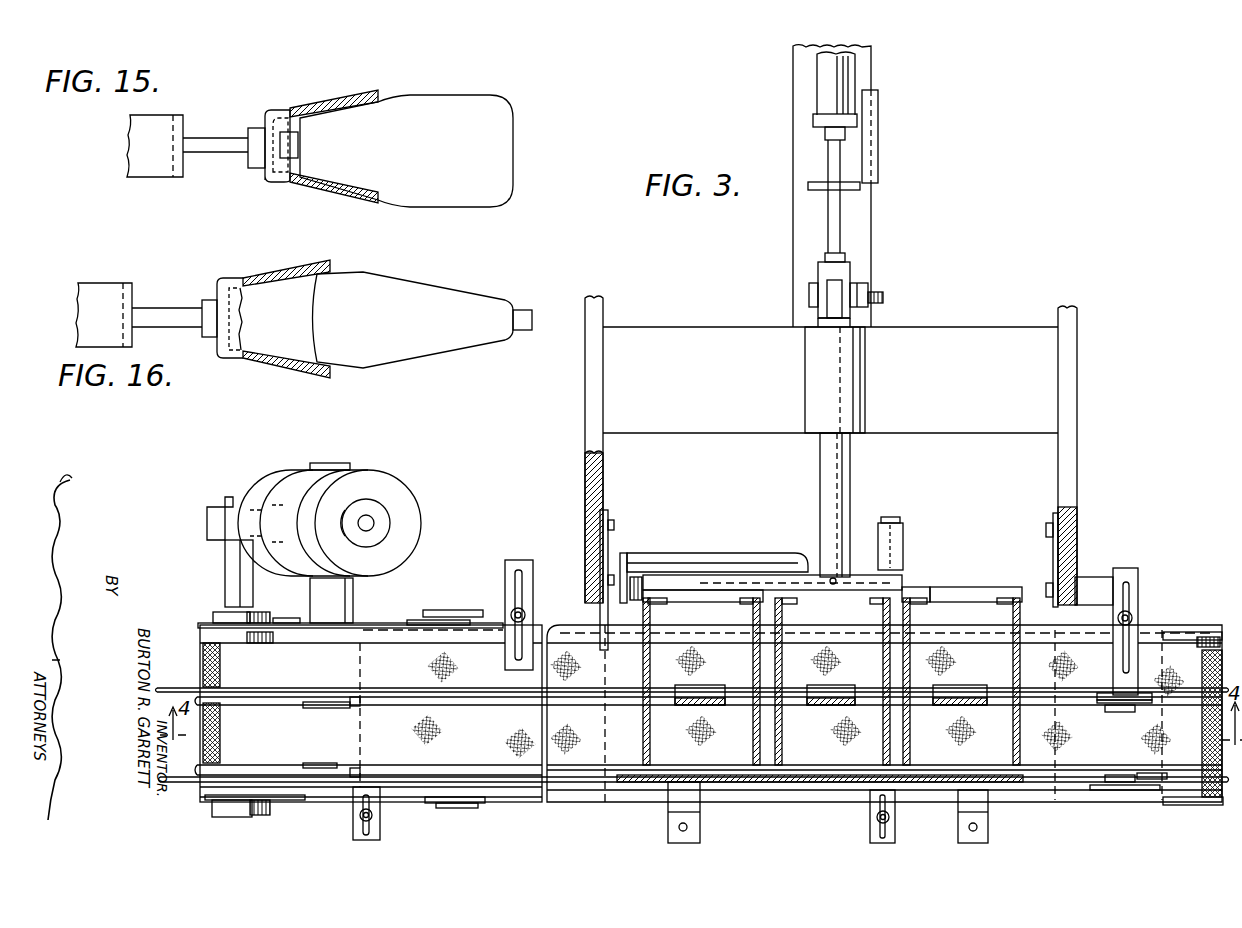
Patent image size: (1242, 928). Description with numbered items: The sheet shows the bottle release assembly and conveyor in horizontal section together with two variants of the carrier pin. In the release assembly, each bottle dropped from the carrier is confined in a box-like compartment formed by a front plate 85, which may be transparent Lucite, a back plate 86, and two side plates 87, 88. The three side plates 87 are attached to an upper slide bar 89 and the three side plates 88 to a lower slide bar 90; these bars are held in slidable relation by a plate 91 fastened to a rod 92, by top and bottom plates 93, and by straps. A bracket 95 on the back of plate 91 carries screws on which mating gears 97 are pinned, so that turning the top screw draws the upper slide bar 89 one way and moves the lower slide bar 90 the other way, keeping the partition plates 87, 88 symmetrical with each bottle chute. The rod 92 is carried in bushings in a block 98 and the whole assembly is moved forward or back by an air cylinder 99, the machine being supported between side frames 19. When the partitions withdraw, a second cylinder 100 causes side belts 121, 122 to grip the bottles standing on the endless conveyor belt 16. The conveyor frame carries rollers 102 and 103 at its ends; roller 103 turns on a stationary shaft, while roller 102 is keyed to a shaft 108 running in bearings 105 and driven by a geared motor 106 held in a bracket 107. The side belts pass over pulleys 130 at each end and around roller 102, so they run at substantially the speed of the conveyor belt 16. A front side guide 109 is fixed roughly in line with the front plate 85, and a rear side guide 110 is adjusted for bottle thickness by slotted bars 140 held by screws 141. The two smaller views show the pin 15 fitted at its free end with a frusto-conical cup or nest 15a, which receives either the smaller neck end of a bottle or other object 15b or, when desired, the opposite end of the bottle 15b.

In FIG. 15, the pin 15 is at (218, 143).
In FIG. 16, the pin 15 is at (162, 315).
In FIG. 15, the frusto-conical cup or nest 15a is at (323, 102).
In FIG. 16, the frusto-conical cup or nest 15a is at (273, 309).
In FIG. 15, the bottle or other object 15b is at (422, 103).
In FIG. 16, the bottle or other object 15b is at (410, 283).
In FIG. 3, the air cylinder 99 is at (858, 83).
In FIG. 3, the block 98 is at (862, 393).
In FIG. 3, the rod 92 is at (850, 493).
In FIG. 3, the side frames 19 is at (588, 424).
In FIG. 3, the bracket 95 is at (622, 560).
In FIG. 3, the mating gears 97 is at (640, 580).
In FIG. 3, the plate 91 is at (702, 556).
In FIG. 3, the plates 93 is at (745, 578).
In FIG. 3, the cylinder 100 is at (903, 545).
In FIG. 3, the upper slide bar 89 is at (925, 590).
In FIG. 3, the lower slide bar 90 is at (985, 590).
In FIG. 3, the conveyor belt 16 is at (1146, 655).
In FIG. 3, the roller 102 is at (210, 643).
In FIG. 3, the rear side guide 110 is at (270, 696).
In FIG. 3, the front side guide 109 is at (255, 780).
In FIG. 3, the pulley 130 is at (318, 763).
In FIG. 3, the side belt 122 is at (355, 703).
In FIG. 3, the side belt 121 is at (360, 774).
In FIG. 3, the roller 103 is at (1220, 634).
In FIG. 3, the side plate 87 is at (650, 740).
In FIG. 3, the side plate 88 is at (753, 665).
In FIG. 3, the back plate 86 is at (718, 706).
In FIG. 3, the front plate 85 is at (815, 782).
In FIG. 3, the slotted bars 140 is at (533, 568).
In FIG. 3, the screws 141 is at (526, 613).
In FIG. 3, the geared motor 106 is at (413, 520).
In FIG. 3, the bracket 107 is at (353, 602).
In FIG. 3, the shaft 108 is at (226, 562).
In FIG. 3, the bearings 105 is at (218, 612).